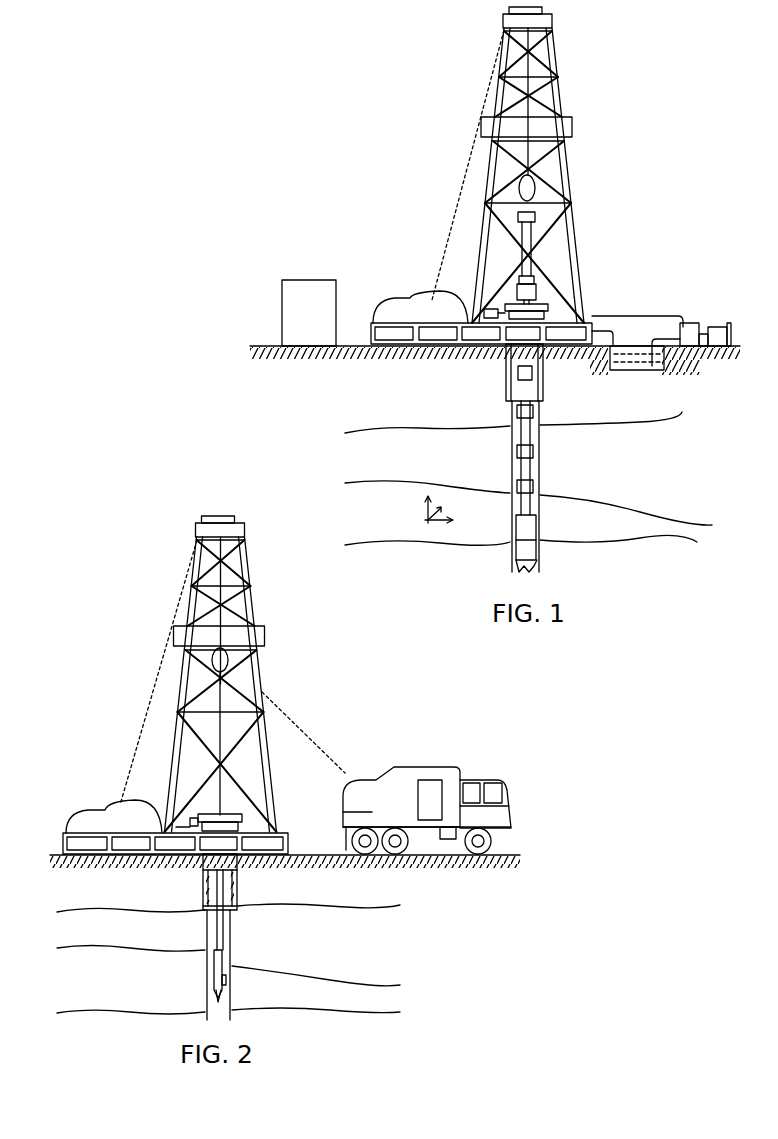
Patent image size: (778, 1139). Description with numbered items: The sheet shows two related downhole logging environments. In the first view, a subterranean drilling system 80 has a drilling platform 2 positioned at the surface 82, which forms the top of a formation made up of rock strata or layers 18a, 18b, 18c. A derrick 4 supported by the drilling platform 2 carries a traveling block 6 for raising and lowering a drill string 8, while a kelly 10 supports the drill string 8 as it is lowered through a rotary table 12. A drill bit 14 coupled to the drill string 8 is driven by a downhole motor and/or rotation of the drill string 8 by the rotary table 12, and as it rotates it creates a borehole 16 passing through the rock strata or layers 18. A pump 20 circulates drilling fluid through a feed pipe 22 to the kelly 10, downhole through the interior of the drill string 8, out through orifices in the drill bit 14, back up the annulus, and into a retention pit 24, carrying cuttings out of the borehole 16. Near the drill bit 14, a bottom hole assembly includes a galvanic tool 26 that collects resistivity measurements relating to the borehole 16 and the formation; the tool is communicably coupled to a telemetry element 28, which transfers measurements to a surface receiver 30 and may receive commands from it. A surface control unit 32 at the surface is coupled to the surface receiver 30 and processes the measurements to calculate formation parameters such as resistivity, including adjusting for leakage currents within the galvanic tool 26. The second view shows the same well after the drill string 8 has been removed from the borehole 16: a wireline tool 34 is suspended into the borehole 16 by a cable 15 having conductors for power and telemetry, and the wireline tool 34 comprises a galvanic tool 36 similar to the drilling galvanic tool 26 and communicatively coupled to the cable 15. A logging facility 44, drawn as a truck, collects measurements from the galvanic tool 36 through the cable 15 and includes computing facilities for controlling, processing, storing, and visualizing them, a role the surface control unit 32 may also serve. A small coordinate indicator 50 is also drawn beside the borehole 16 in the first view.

In FIG. 1, the drilling platform 2 is at (371, 325).
In FIG. 2, the drilling platform 2 is at (288, 848).
In FIG. 1, the derrick 4 is at (557, 93).
In FIG. 2, the derrick 4 is at (271, 757).
In FIG. 1, the traveling block 6 is at (536, 185).
In FIG. 2, the traveling block 6 is at (232, 655).
In FIG. 1, the drill string 8 is at (536, 410).
In FIG. 1, the kelly 10 is at (536, 216).
In FIG. 1, the rotary table 12 is at (548, 307).
In FIG. 2, the rotary table 12 is at (236, 818).
In FIG. 1, the drill bit 14 is at (538, 568).
In FIG. 2, the cable 15 is at (206, 884).
In FIG. 1, the borehole 16 is at (536, 428).
In FIG. 2, the borehole 16 is at (223, 928).
In FIG. 1, the rock strata or layers 18 is at (513, 402).
In FIG. 2, the rock strata or layers 18 is at (274, 904).
In FIG. 1, the rock stratum or layer 18a is at (375, 512).
In FIG. 2, the rock stratum or layer 18a is at (372, 897).
In FIG. 1, the rock stratum or layer 18b is at (528, 483).
In FIG. 2, the rock stratum or layer 18b is at (87, 937).
In FIG. 1, the rock stratum or layer 18c is at (668, 415).
In FIG. 2, the rock stratum or layer 18c is at (87, 1004).
In FIG. 1, the pump 20 is at (694, 323).
In FIG. 1, the feed pipe 22 is at (630, 315).
In FIG. 1, the retention pit 24 is at (650, 370).
In FIG. 1, the galvanic tool 26 is at (519, 538).
In FIG. 1, the telemetry element 28 is at (538, 522).
In FIG. 1, the surface receiver 30 is at (545, 284).
In FIG. 1, the surface control unit 32 is at (320, 318).
In FIG. 2, the wireline tool 34 is at (212, 968).
In FIG. 2, the galvanic tool 36 is at (212, 985).
In FIG. 2, the logging facility 44 is at (410, 765).
In FIG. 1, the coordinate direction 50 is at (420, 512).
In FIG. 1, the subterranean drilling system 80 is at (645, 136).
In FIG. 1, the surface 82 is at (266, 346).
In FIG. 2, the surface 82 is at (66, 855).